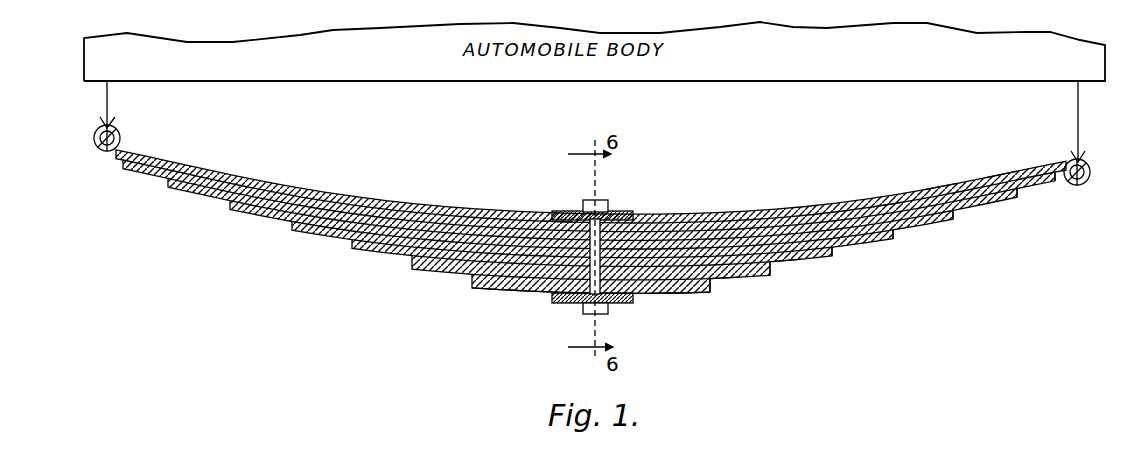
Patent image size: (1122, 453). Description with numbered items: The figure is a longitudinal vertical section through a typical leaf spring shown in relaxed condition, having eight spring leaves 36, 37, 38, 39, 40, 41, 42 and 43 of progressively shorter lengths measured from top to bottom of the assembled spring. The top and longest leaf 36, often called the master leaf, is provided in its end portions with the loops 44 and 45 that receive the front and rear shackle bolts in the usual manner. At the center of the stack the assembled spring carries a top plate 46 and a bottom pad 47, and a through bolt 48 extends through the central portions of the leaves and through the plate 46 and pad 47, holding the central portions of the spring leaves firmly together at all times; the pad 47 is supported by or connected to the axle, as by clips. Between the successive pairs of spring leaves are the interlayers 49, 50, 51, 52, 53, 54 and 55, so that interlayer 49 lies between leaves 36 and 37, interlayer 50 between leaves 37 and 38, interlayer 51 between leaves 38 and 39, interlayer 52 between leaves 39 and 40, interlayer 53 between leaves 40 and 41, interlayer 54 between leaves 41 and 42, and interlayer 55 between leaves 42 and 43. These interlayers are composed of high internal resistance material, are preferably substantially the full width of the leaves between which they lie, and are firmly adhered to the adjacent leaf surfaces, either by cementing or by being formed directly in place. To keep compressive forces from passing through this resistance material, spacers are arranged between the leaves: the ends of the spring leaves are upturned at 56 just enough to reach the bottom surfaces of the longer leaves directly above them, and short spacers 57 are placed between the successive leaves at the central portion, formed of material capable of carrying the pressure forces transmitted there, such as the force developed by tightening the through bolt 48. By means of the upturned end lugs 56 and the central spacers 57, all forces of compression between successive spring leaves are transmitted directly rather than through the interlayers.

The spring leaf 36 is at (920, 192).
The spring leaf 37 is at (970, 182).
The spring leaf 38 is at (853, 203).
The spring leaf 39 is at (800, 217).
The spring leaf 40 is at (757, 253).
The spring leaf 41 is at (743, 279).
The spring leaf 42 is at (727, 279).
The spring leaf 43 is at (660, 295).
The loop 44 is at (95, 143).
The loop 45 is at (1071, 163).
The top plate 46 is at (630, 212).
The bottom pad 47 is at (565, 303).
The through bolt 48 is at (573, 212).
The interlayer 49 is at (1002, 180).
The interlayer 50 is at (945, 183).
The interlayer 51 is at (883, 200).
The interlayer 52 is at (793, 267).
The interlayer 53 is at (773, 273).
The interlayer 54 is at (745, 283).
The interlayer 55 is at (673, 293).
The upturned lug 56 is at (716, 290).
The short spacer 57 is at (552, 218).